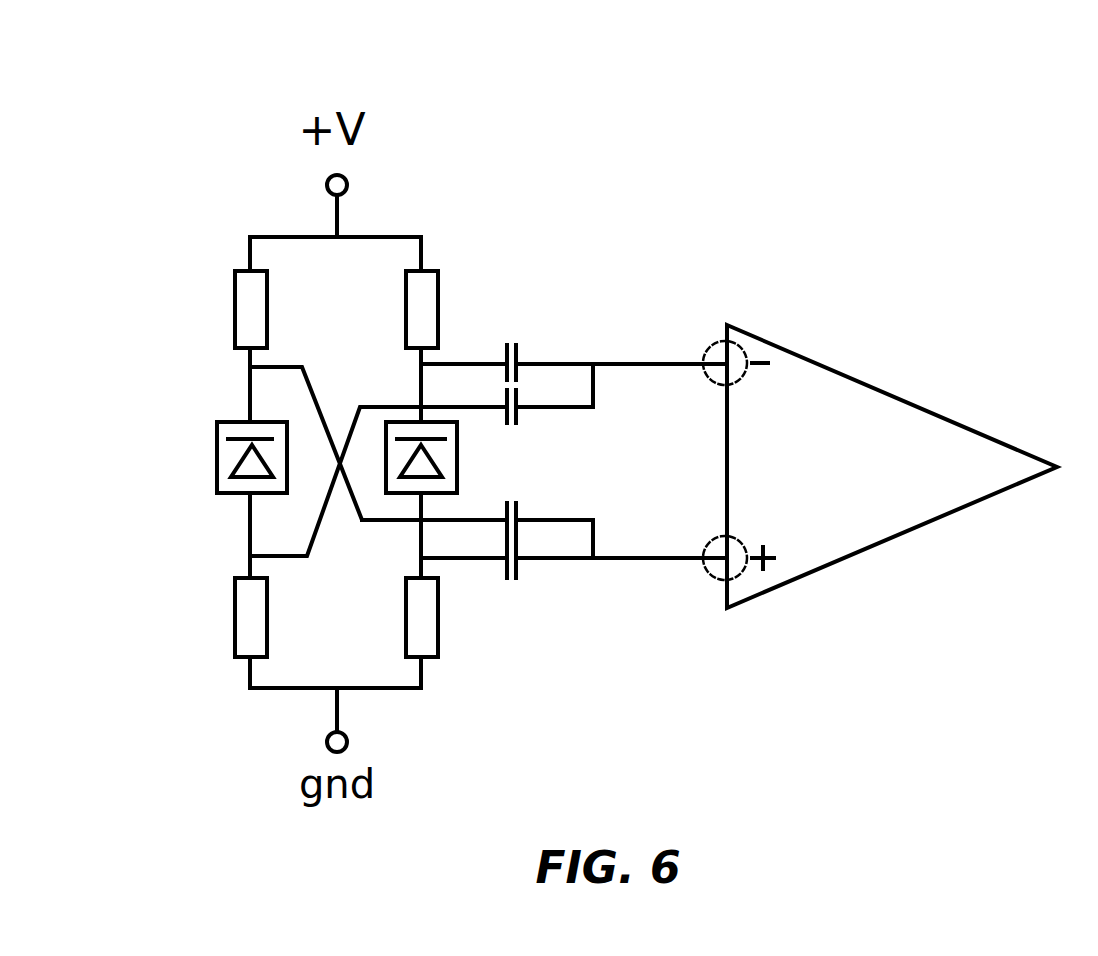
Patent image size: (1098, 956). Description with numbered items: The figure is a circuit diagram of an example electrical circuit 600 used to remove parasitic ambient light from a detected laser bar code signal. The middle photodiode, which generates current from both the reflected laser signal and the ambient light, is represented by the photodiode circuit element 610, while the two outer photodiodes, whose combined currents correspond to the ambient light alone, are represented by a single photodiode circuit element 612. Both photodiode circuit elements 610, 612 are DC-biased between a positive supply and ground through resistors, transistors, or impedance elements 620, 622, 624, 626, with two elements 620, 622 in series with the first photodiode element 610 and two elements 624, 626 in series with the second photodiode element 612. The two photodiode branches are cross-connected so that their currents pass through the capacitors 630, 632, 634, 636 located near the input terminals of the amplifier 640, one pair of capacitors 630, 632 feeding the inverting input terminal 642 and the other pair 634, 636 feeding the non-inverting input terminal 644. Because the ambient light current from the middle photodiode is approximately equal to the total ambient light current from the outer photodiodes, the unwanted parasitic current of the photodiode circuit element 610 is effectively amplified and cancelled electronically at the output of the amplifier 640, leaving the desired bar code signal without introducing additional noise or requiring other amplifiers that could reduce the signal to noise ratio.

The electrical circuit 600 is at (335, 59).
The photodiode circuit element 610 is at (217, 456).
The photodiode circuit element 612 is at (458, 456).
The impedance element 620 is at (236, 312).
The impedance element 622 is at (236, 622).
The impedance element 624 is at (407, 312).
The impedance element 626 is at (407, 622).
The capacitor 630 is at (519, 358).
The capacitor 632 is at (518, 421).
The capacitor 634 is at (518, 505).
The capacitor 636 is at (519, 572).
The amplifier 640 is at (857, 376).
The inverting input terminal 642 is at (718, 342).
The non-inverting input terminal 644 is at (715, 576).